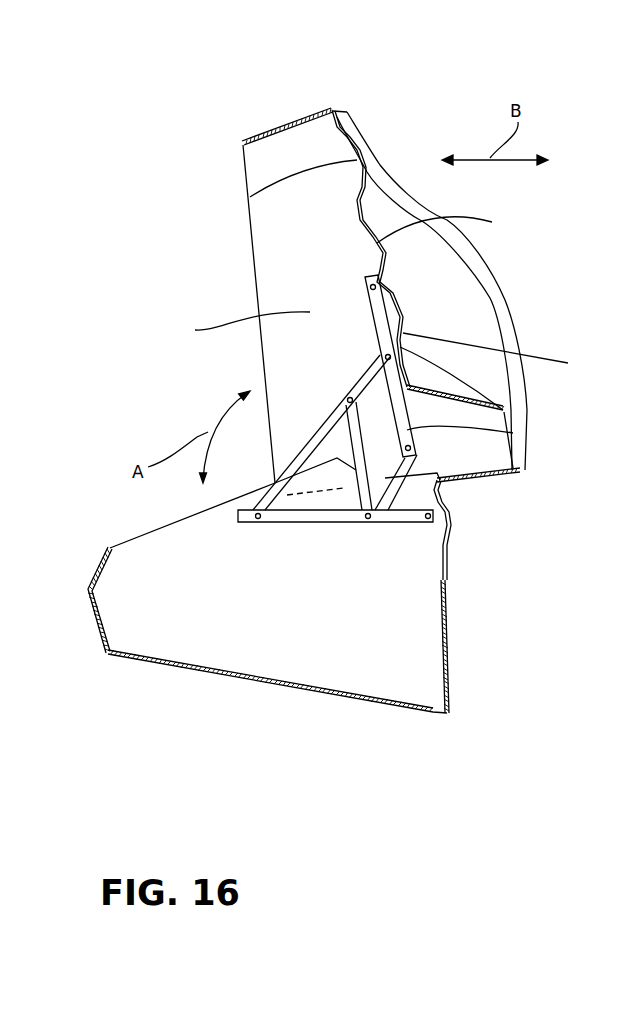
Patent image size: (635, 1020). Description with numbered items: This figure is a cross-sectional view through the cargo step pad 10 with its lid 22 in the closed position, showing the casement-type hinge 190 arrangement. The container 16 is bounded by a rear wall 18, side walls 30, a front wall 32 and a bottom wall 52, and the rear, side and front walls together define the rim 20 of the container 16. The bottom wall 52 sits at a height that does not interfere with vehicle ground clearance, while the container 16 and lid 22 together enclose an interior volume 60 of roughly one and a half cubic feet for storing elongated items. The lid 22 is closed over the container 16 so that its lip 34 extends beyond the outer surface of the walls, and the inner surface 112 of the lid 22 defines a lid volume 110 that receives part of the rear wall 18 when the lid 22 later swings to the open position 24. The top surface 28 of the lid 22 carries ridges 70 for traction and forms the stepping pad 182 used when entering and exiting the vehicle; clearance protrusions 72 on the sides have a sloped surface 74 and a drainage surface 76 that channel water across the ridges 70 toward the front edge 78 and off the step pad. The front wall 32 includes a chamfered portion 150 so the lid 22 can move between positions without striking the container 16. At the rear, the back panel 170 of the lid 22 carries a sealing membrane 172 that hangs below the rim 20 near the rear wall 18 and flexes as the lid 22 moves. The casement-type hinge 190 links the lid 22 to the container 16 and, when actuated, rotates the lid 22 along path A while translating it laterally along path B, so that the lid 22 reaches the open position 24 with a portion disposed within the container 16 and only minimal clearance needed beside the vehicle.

The cargo step pad 10 is at (96, 152).
The container 16 is at (150, 673).
The rear wall 18 is at (448, 692).
The rim 20 is at (110, 548).
The lid 22 is at (377, 121).
The open position 24 is at (531, 256).
The top surface 28 is at (520, 238).
The side walls 30 is at (218, 635).
The front wall 32 is at (90, 607).
The lip 34 is at (243, 143).
The bottom wall 52 is at (312, 688).
The interior volume 60 is at (213, 603).
The ridges 70 is at (250, 197).
The clearance protrusions 72 is at (527, 327).
The sloped surface 74 is at (413, 195).
The drainage surface 76 is at (460, 306).
The front edge 78 is at (332, 112).
The lid volume 110 is at (329, 239).
The inner surface 112 is at (234, 328).
The chamfered portion 150 is at (97, 577).
The back panel 170 is at (503, 478).
The sealing membrane 172 is at (455, 527).
The stepping pad 182 is at (502, 353).
The casement-type hinge 190 is at (513, 433).